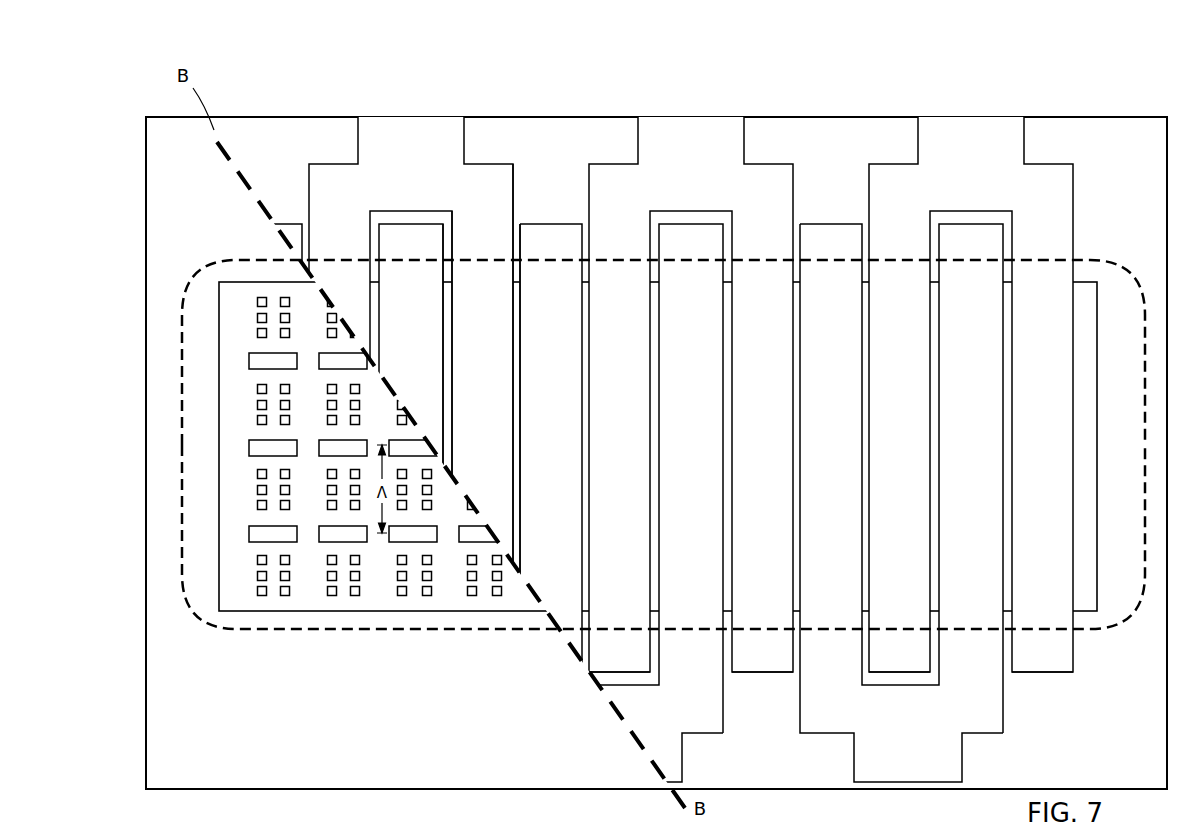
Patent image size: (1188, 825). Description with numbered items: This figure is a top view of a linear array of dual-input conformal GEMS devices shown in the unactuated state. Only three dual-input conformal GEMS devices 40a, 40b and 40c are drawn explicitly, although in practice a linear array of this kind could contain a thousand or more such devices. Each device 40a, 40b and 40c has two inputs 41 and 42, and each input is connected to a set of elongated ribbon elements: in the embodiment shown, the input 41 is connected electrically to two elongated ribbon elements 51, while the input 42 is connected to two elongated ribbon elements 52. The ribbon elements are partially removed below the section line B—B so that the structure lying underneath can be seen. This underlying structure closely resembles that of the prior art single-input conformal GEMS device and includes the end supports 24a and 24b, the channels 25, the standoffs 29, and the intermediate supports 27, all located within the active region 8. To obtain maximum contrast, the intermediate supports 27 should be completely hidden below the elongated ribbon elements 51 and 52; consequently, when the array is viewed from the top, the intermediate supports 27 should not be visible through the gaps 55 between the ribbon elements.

The active region 8 is at (243, 633).
The end support 24a is at (1092, 268).
The end support 24b is at (1100, 628).
The channels 25 is at (295, 504).
The intermediate supports 27 is at (272, 530).
The standoffs 29 is at (360, 600).
The dual-input conformal GEMS device 40a is at (517, 110).
The dual-input conformal GEMS device 40b is at (800, 110).
The dual-input conformal GEMS device 40c is at (939, 353).
The input 41 is at (659, 353).
The input 42 is at (621, 503).
The elongated ribbon elements 51 is at (1051, 252).
The elongated ribbon elements 52 is at (980, 252).
The gaps 55 is at (481, 448).